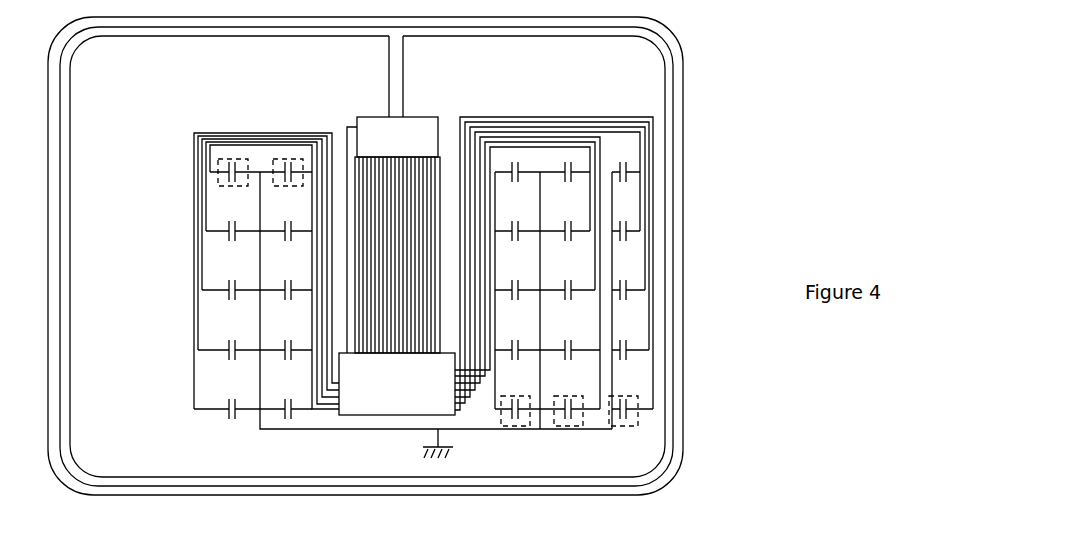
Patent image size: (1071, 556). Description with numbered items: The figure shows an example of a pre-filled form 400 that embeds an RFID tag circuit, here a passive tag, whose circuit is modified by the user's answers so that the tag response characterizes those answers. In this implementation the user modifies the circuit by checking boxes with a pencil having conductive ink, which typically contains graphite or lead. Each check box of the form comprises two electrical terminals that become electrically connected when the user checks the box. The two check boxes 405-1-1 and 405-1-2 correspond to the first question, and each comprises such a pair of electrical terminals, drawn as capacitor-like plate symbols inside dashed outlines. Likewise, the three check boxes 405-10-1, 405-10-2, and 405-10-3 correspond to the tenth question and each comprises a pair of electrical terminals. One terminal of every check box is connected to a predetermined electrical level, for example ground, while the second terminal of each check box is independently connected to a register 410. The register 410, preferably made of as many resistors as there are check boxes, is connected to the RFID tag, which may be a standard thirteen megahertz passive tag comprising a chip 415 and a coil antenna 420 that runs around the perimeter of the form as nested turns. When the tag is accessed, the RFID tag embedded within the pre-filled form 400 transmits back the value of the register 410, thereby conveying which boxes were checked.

The pre-filled form 400 is at (715, 120).
The coil antenna 420 is at (257, 37).
The chip 415 is at (416, 117).
The register 410 is at (373, 413).
The check box 405-1-1 is at (238, 185).
The check box 405-1-2 is at (292, 158).
The check box 405-10-1 is at (520, 427).
The check box 405-10-2 is at (570, 427).
The check box 405-10-3 is at (623, 427).